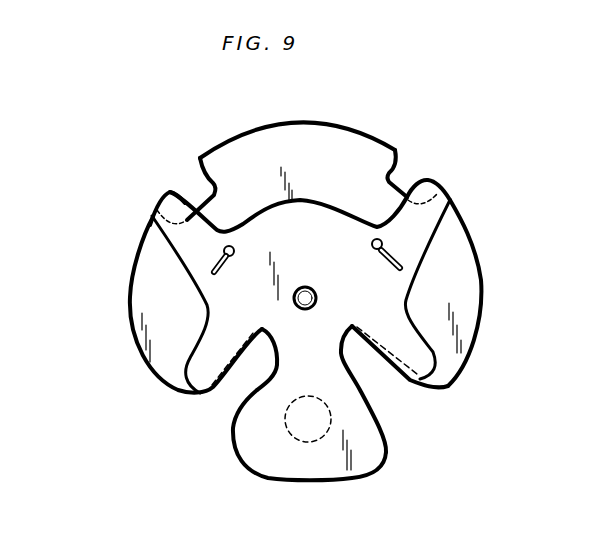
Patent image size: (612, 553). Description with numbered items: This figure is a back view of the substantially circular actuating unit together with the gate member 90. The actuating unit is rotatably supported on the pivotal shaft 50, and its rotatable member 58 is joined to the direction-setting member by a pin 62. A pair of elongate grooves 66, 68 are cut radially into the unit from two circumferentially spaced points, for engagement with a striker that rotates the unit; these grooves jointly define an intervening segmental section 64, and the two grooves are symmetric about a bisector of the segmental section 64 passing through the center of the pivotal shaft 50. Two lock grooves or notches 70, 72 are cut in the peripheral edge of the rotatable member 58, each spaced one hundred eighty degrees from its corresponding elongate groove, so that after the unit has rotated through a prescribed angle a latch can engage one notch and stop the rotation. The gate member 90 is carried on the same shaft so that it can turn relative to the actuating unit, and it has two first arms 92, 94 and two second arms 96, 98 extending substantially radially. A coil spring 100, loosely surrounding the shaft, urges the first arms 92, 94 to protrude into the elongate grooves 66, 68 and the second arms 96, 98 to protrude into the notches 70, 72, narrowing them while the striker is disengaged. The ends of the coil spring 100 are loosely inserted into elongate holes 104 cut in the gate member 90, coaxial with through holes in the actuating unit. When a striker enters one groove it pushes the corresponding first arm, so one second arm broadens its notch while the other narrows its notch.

The pivotal shaft 50 is at (292, 313).
The rotatable member 58 is at (336, 145).
The pin 62 is at (313, 432).
The segmental section 64 is at (268, 479).
The elongate groove 66 is at (388, 388).
The elongate groove 68 is at (235, 390).
The lock groove or notch 70 is at (193, 176).
The lock groove or notch 72 is at (407, 170).
The gate member 90 is at (397, 310).
The first arm 92 is at (413, 380).
The first arm 94 is at (215, 392).
The second arm 96 is at (172, 198).
The second arm 98 is at (437, 182).
The coil spring 100 is at (213, 277).
The elongate hole 104 is at (222, 250).